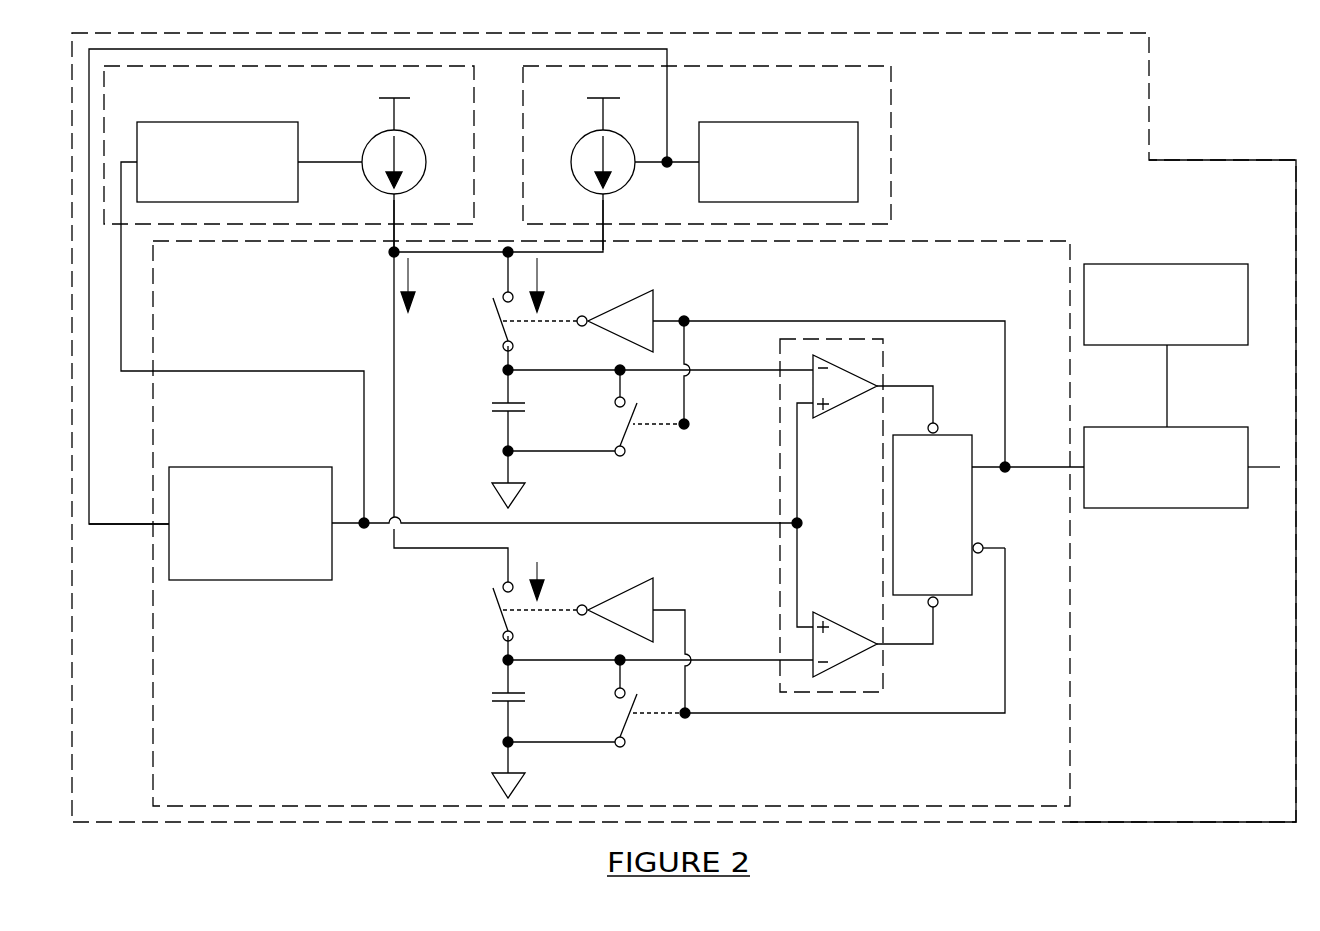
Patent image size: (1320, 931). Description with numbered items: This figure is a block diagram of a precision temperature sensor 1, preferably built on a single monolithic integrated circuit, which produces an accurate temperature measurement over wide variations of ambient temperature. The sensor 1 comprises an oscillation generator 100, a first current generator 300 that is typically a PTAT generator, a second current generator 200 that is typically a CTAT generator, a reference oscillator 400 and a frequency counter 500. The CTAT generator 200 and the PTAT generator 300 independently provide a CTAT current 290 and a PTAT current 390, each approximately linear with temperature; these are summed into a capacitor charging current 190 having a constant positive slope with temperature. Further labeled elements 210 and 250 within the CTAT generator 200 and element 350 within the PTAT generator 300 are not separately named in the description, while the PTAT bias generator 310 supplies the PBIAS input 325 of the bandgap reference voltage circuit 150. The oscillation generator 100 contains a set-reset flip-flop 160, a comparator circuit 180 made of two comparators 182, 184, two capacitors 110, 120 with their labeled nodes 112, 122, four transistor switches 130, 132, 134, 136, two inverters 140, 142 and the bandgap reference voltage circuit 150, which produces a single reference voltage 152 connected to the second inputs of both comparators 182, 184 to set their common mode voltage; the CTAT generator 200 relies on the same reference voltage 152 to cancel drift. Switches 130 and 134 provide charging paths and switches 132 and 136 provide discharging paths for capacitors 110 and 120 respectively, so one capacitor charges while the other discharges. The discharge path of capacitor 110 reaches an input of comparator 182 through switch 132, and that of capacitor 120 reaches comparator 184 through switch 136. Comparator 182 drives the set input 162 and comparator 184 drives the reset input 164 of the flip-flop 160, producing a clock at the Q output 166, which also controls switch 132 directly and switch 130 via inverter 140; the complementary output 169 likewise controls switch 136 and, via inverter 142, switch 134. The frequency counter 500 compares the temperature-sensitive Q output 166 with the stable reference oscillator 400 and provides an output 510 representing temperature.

The precision temperature sensor 1 is at (1196, 132).
The oscillation generator 100 is at (1000, 240).
The capacitor 110 is at (496, 414).
The first node voltage V1 112 is at (658, 376).
The capacitor 120 is at (497, 704).
The second node voltage V2 122 is at (658, 666).
The transistor switch 130 is at (500, 338).
The transistor switch 132 is at (633, 428).
The transistor switch 134 is at (500, 622).
The transistor switch 136 is at (633, 718).
The inverter 140 is at (647, 291).
The inverter 142 is at (653, 578).
The bandgap reference voltage circuit 150 is at (222, 467).
The reference voltage 152 is at (510, 485).
The set-reset flip-flop 160 is at (943, 434).
The set input 162 is at (938, 420).
The reset input 164 is at (950, 608).
The Q output 166 is at (973, 470).
The QN inverted output 169 is at (984, 553).
The comparator circuit 180 is at (883, 345).
The comparator 182 is at (842, 405).
The comparator 184 is at (845, 626).
The capacitor charging current 190 is at (431, 291).
The second current generator 200 is at (230, 224).
The CTAT bias generator 210 is at (263, 122).
The CTAT current source 250 is at (377, 130).
The CTAT current 290 is at (429, 178).
The first current generator 300 is at (893, 135).
The PTAT bias generator 310 is at (733, 122).
The PBIAS input 325 is at (129, 528).
The PTAT current source 350 is at (617, 192).
The PTAT current 390 is at (566, 178).
The reference oscillator 400 is at (1200, 264).
The frequency counter 500 is at (1188, 609).
The output 510 is at (1203, 427).